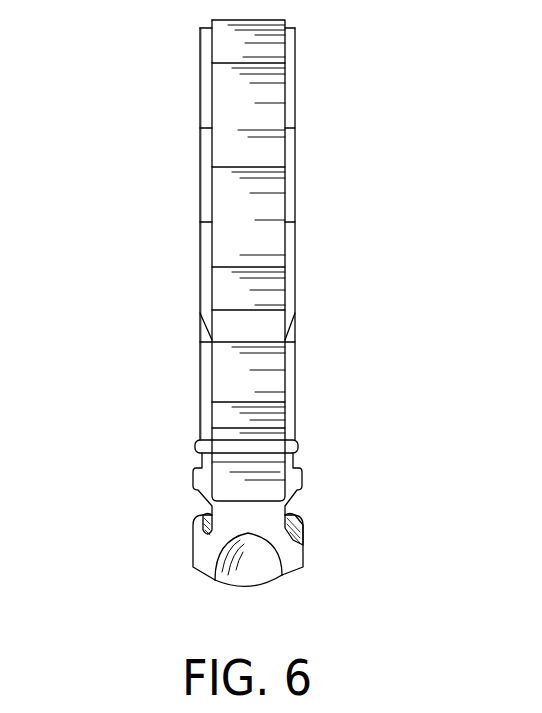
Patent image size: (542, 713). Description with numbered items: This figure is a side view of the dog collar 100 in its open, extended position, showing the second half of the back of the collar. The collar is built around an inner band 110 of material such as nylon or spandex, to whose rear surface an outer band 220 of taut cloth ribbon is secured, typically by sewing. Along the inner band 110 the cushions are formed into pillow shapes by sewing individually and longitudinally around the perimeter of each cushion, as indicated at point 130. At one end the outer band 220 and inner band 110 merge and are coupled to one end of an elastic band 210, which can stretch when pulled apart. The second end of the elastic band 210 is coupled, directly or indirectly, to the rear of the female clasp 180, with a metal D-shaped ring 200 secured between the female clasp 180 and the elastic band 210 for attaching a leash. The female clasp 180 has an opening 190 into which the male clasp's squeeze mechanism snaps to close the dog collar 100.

The dog collar 100 is at (148, 292).
The inner band 110 is at (295, 162).
The point of sewing around cushion perimeter 130 is at (200, 168).
The outer band 220 is at (260, 88).
The ring 200 is at (300, 444).
The elastic band 210 is at (300, 477).
The female clasp 180 is at (300, 532).
The opening of female clasp 190 is at (200, 522).